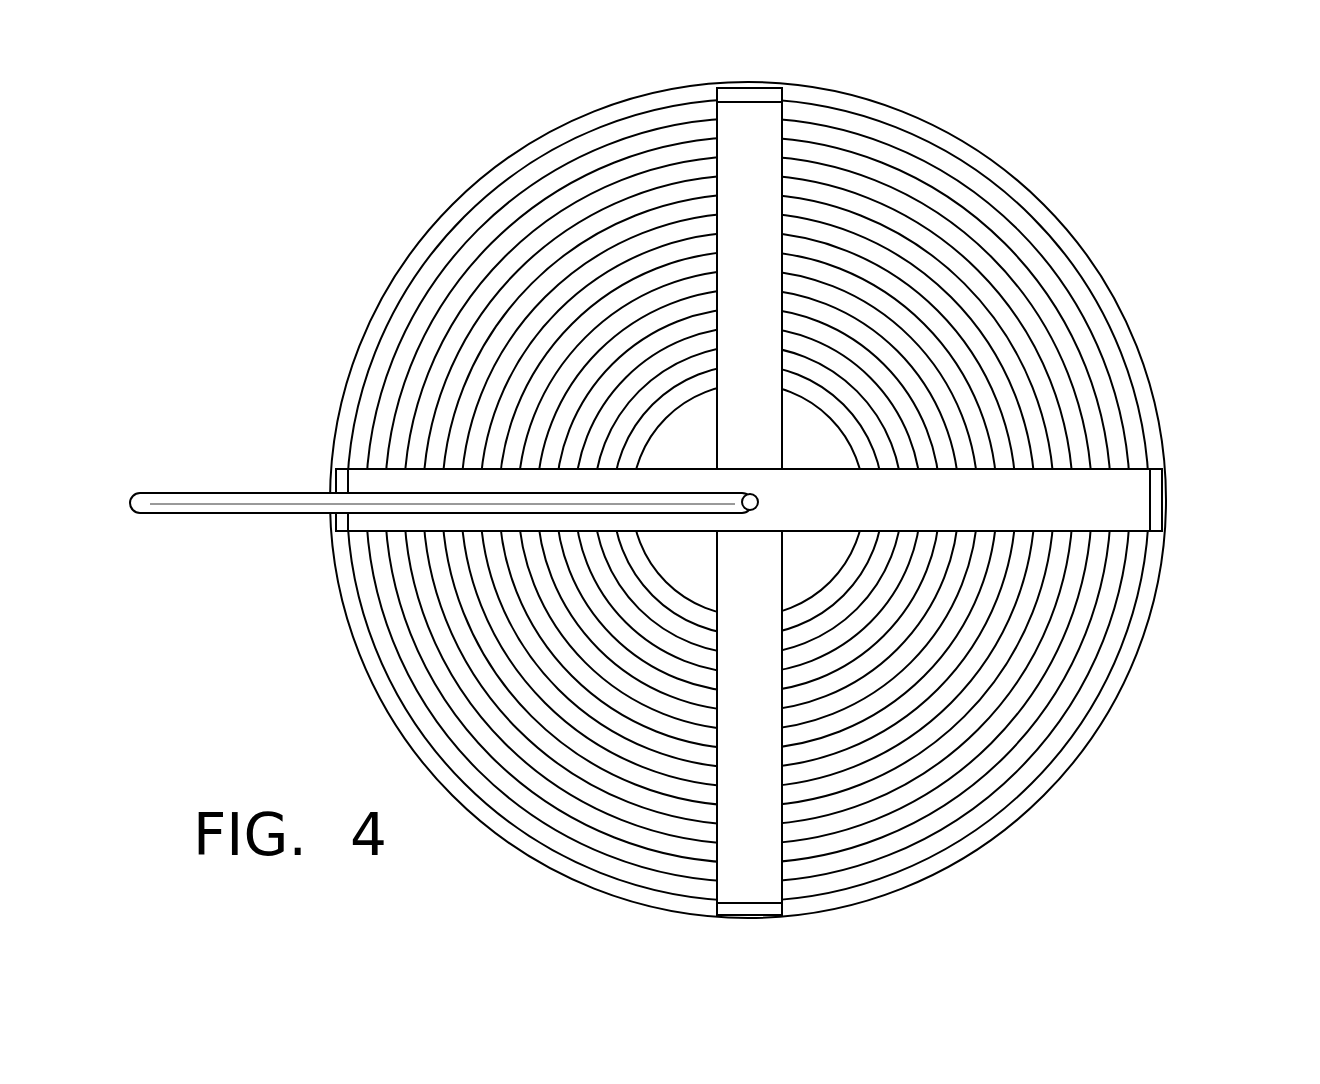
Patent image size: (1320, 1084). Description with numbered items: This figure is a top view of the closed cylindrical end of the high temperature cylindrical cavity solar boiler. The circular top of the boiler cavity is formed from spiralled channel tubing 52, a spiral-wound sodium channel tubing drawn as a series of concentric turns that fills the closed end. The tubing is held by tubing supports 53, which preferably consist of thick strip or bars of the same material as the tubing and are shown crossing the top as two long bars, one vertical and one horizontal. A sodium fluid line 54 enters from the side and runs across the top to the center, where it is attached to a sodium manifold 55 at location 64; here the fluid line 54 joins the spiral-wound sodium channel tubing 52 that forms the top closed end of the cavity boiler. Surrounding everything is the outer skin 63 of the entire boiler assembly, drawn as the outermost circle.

The spiralled channel tubing 52 is at (977, 742).
The tubing supports 53 is at (769, 283).
The sodium fluid line 54 is at (441, 486).
The sodium manifold 55 is at (673, 438).
The outer skin 63 is at (1007, 167).
The location 64 is at (756, 492).